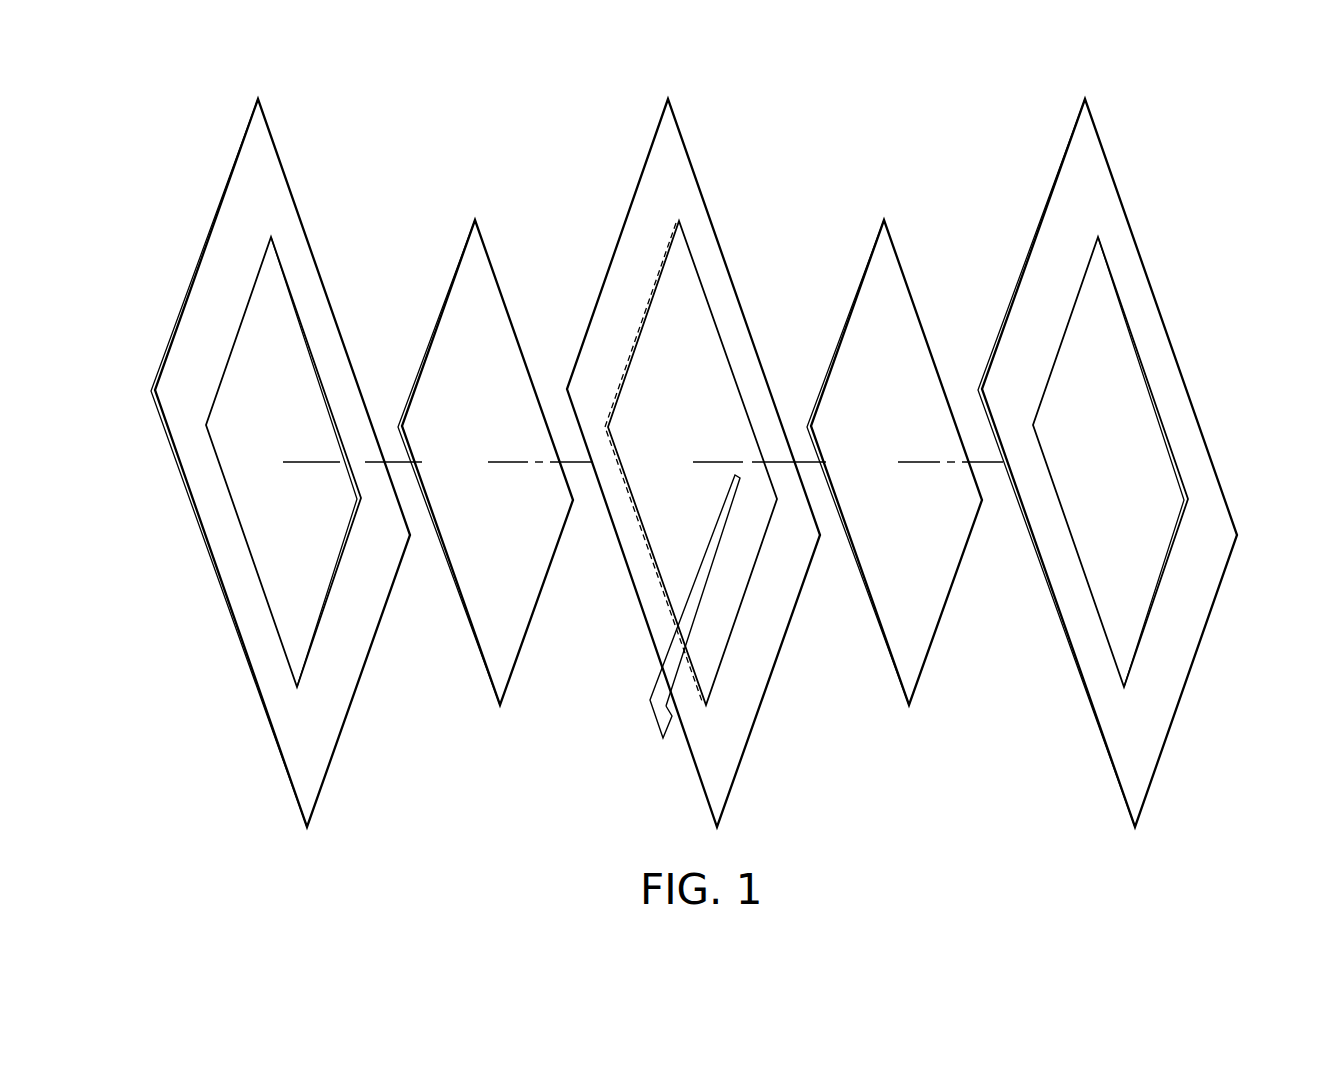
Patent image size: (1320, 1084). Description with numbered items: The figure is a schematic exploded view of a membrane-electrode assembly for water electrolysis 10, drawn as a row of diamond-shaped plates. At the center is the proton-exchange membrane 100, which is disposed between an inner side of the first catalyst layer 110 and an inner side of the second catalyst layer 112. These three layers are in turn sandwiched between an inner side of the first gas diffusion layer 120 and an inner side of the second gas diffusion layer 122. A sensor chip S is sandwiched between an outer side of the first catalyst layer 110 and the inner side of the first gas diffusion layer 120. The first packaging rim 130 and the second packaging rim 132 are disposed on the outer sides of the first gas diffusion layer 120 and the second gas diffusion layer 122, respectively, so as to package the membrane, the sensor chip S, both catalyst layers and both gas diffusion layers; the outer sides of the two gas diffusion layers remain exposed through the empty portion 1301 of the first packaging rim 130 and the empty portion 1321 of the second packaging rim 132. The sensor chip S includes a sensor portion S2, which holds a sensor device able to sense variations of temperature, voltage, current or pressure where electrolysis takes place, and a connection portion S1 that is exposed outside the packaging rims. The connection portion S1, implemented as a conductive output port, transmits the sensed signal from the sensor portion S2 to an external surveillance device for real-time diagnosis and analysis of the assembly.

The membrane-electrode assembly for water electrolysis 10 is at (1252, 129).
The proton-exchange membrane 100 is at (623, 221).
The first catalyst layer 110 is at (688, 280).
The second catalyst layer 112 is at (642, 321).
The first gas diffusion layer 120 is at (856, 340).
The second gas diffusion layer 122 is at (447, 340).
The first packaging rim 130 is at (1033, 243).
The empty portion of the first packaging rim 1301 is at (1113, 364).
The second packaging rim 132 is at (207, 237).
The empty portion of the second packaging rim 1321 is at (278, 341).
The sensor chip S is at (666, 616).
The connection portion S1 is at (659, 715).
The sensor portion S2 is at (731, 504).